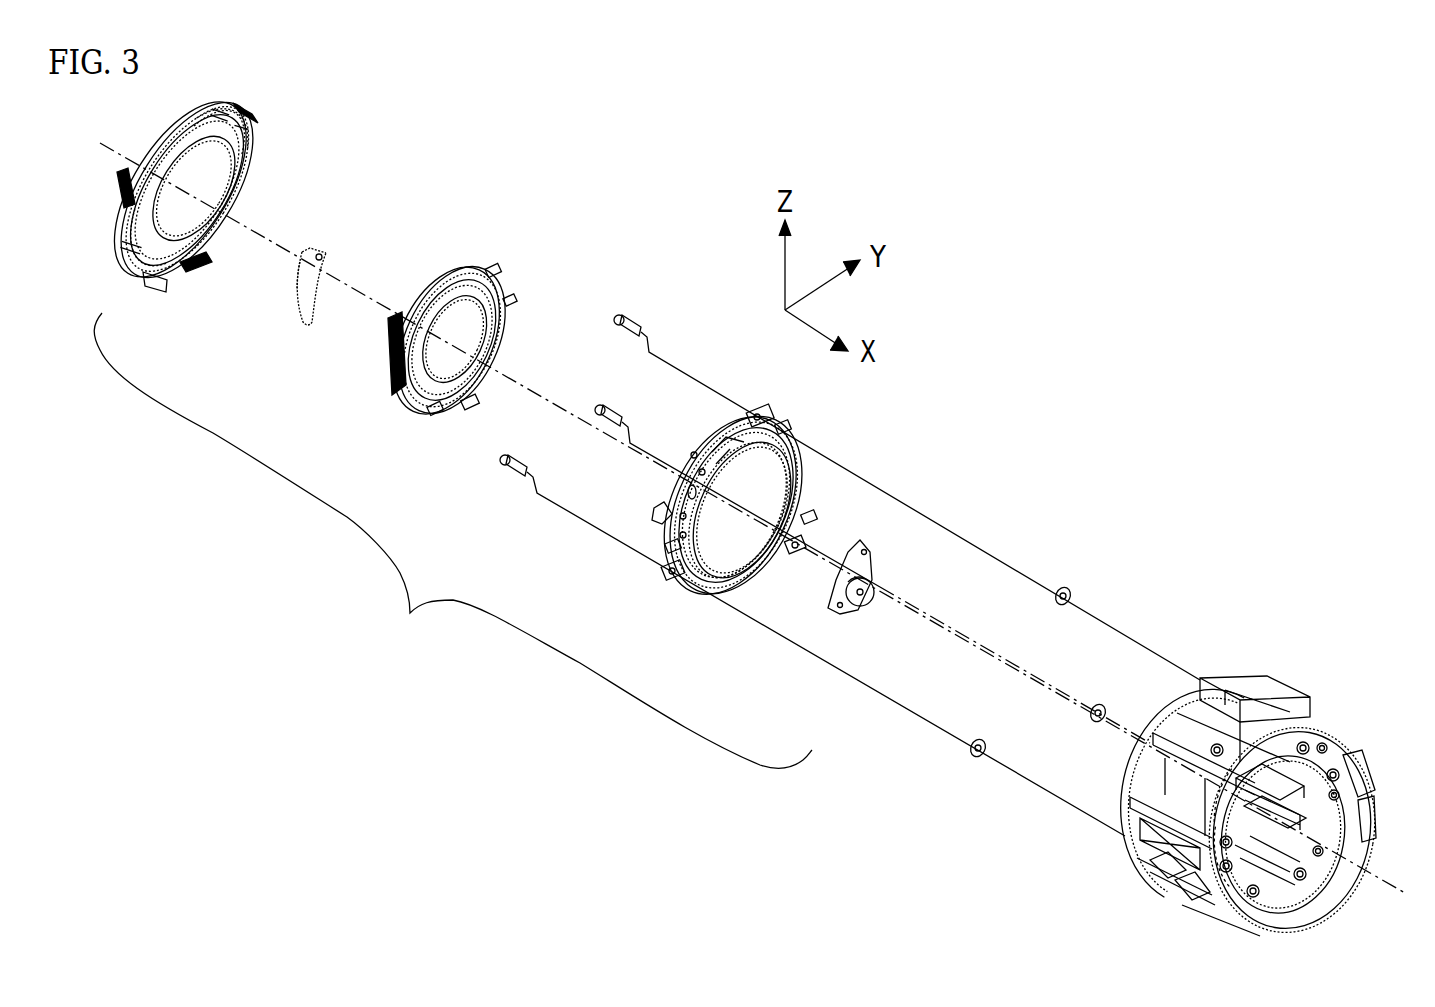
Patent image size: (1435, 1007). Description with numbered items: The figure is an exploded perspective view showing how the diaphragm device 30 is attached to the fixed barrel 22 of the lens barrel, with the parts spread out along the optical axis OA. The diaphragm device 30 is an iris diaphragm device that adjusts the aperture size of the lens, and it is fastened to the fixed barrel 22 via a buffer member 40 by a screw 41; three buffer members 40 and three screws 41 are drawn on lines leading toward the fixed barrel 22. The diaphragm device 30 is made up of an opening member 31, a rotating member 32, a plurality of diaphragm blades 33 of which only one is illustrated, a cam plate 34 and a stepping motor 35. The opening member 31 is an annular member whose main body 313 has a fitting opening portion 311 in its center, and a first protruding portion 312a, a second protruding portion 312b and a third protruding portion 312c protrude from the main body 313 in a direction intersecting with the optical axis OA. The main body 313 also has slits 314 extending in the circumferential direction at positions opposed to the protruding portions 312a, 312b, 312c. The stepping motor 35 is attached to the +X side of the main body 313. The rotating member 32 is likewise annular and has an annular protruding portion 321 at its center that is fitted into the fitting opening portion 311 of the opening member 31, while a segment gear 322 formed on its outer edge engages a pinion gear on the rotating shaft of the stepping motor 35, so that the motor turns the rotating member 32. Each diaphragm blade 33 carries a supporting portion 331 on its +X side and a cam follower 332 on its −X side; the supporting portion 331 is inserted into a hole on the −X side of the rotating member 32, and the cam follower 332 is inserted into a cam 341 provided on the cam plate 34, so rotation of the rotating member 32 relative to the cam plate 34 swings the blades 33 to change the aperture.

The fixed barrel 22 is at (1290, 694).
The diaphragm device 30 is at (453, 540).
The opening member 31 is at (692, 598).
The fitting opening portion 311 is at (797, 486).
The first protruding portion 312a is at (794, 552).
The second protruding portion 312b is at (666, 576).
The third protruding portion 312c is at (760, 408).
The main body 313 is at (736, 440).
The slits 314 is at (786, 428).
The rotating member 32 is at (400, 392).
The annular protruding portion 321 is at (472, 390).
The segment gear 322 is at (392, 344).
The diaphragm blades 33 is at (294, 312).
The supporting portion 331 is at (324, 256).
The cam follower 332 is at (299, 264).
The cam plate 34 is at (262, 144).
The cam 341 is at (236, 197).
The stepping motor 35 is at (874, 606).
The buffer member 40 is at (1068, 592).
The screw 41 is at (626, 314).
The optical axis OA is at (1385, 870).